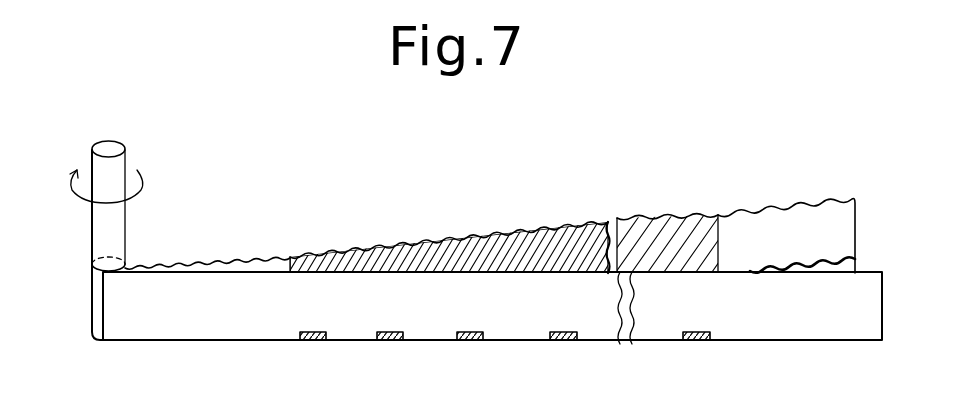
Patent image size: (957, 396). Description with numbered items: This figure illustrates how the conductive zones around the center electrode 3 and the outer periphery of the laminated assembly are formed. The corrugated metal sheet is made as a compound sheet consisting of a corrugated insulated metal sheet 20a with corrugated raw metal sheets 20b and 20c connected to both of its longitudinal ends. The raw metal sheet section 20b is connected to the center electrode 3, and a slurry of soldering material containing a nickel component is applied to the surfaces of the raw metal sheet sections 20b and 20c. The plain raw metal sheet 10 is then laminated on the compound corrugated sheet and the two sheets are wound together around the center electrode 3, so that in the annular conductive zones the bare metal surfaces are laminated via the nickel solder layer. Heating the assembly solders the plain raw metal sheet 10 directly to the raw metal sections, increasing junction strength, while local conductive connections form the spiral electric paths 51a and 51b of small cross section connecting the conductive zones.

The center electrode 3 is at (110, 150).
The plain raw metal sheet 10 is at (230, 330).
The corrugated insulated metal sheet 20a is at (536, 232).
The corrugated raw metal sheet 20b is at (243, 260).
The corrugated raw metal sheet 20c is at (780, 215).
The spiral electric path 51a is at (313, 341).
The spiral electric path 51b is at (390, 341).